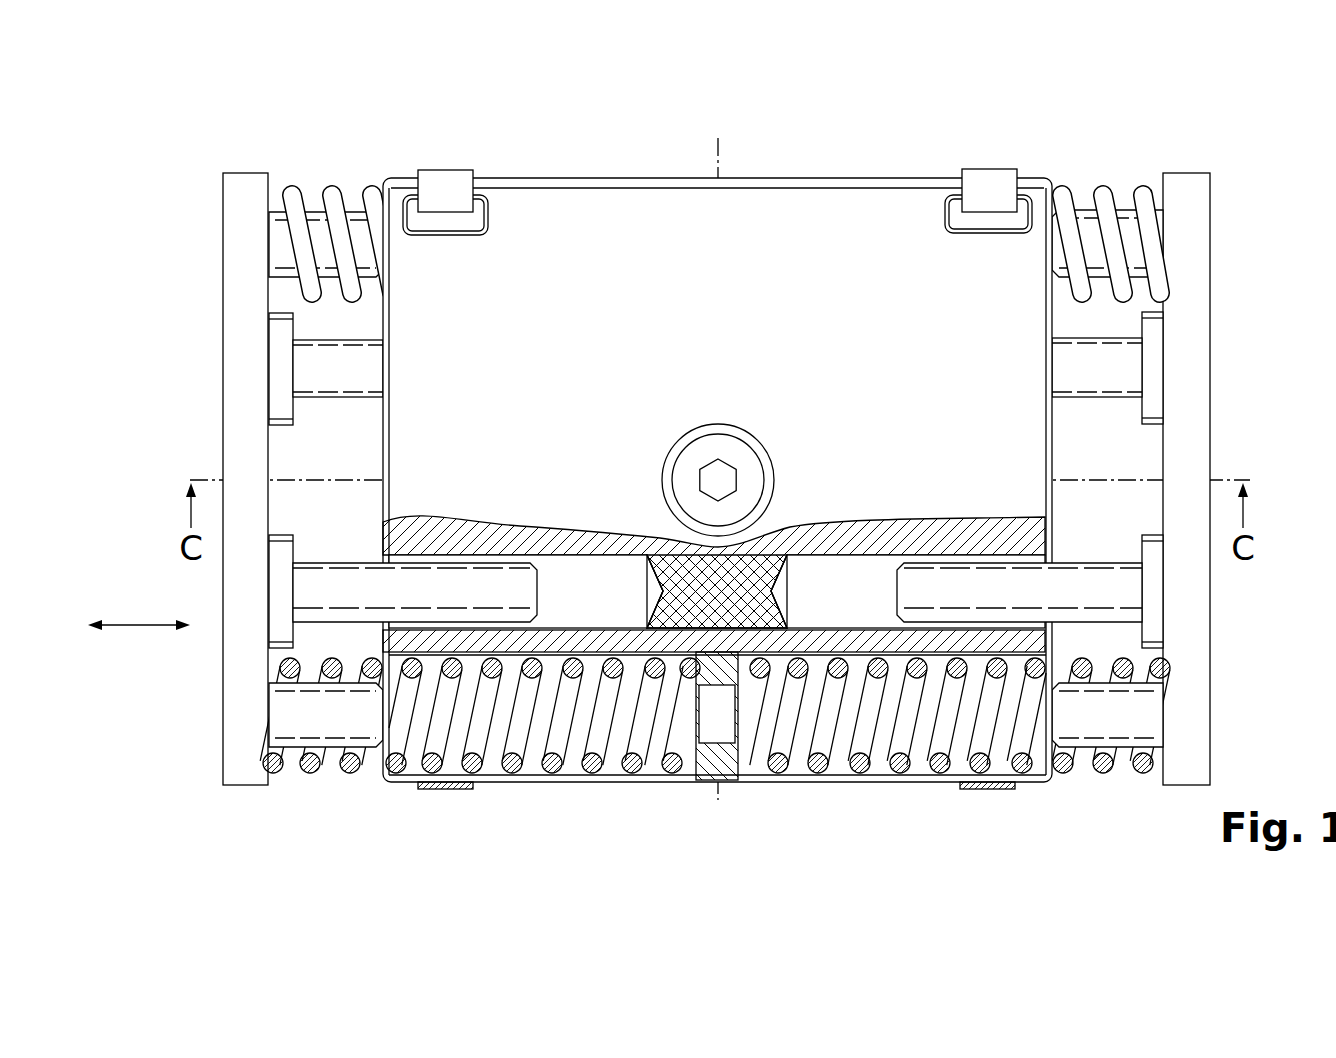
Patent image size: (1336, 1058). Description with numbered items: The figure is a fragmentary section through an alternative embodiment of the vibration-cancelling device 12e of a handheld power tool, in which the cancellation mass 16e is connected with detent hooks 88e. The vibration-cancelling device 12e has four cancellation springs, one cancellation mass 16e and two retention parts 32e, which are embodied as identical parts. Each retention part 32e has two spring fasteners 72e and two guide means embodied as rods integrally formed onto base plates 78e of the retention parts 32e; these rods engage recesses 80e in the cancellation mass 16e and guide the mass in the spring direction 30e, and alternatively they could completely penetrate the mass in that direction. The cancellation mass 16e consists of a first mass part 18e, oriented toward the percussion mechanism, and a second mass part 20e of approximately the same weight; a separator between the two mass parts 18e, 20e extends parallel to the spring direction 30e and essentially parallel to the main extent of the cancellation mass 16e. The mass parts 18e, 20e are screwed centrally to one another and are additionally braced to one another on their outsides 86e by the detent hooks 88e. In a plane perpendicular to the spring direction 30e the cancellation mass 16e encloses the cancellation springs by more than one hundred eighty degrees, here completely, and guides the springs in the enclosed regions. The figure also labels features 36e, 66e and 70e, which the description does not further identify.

The vibration-cancelling device 12e is at (224, 104).
The cancellation mass 16e is at (820, 153).
The first mass part 18e is at (1028, 637).
The second mass part 20e is at (1043, 522).
The spring direction 30e is at (138, 633).
The retention parts 32e is at (236, 420).
The central web 36e is at (710, 770).
The end plate 66e is at (262, 297).
The screw 70e is at (722, 472).
The spring fasteners 72e is at (345, 243).
The base plates 78e is at (236, 340).
The recesses 80e is at (593, 568).
The outsides 86e is at (598, 178).
The detent hooks 88e is at (447, 175).